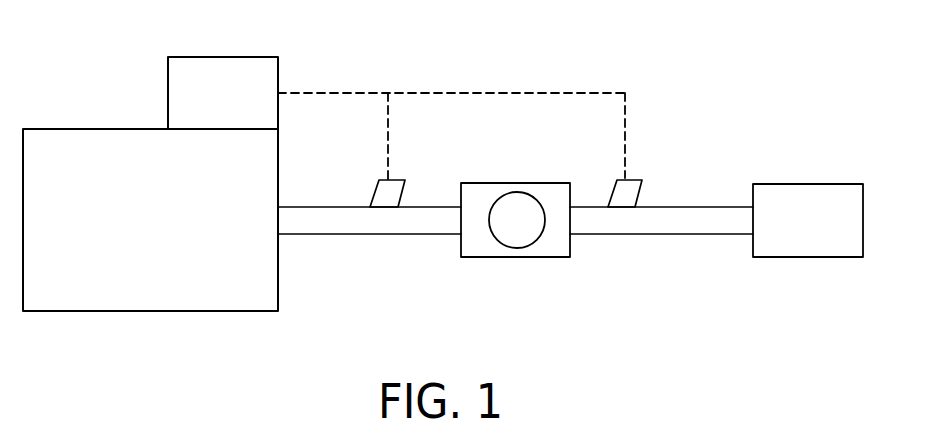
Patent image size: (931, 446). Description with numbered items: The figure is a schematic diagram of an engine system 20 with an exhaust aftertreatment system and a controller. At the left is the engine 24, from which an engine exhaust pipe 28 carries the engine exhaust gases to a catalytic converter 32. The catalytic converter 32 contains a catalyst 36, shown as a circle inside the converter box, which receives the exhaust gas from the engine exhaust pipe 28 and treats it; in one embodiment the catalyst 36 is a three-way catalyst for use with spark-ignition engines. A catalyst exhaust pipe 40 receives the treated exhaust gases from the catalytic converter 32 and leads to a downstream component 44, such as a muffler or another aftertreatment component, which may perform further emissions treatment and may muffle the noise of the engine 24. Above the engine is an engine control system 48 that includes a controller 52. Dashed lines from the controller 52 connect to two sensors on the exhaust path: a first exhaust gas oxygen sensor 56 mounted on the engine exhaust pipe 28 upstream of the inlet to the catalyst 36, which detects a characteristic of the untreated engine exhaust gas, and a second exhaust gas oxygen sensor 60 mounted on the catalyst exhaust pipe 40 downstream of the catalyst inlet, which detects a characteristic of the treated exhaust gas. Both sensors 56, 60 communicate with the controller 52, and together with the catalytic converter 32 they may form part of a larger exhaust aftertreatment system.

The engine system 20 is at (479, 56).
The engine 24 is at (270, 302).
The engine exhaust pipe 28 is at (378, 224).
The catalytic converter 32 is at (523, 243).
The catalyst 36 is at (515, 238).
The catalyst exhaust pipe 40 is at (678, 224).
The downstream component 44 is at (853, 193).
The engine control system 48 is at (243, 69).
The controller 52 is at (178, 66).
The first exhaust gas oxygen sensor 56 is at (397, 188).
The second exhaust gas oxygen sensor 60 is at (633, 188).